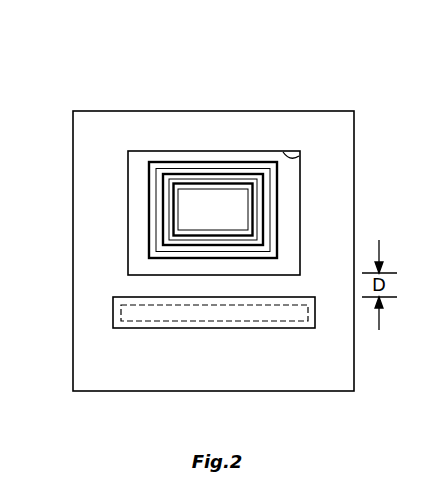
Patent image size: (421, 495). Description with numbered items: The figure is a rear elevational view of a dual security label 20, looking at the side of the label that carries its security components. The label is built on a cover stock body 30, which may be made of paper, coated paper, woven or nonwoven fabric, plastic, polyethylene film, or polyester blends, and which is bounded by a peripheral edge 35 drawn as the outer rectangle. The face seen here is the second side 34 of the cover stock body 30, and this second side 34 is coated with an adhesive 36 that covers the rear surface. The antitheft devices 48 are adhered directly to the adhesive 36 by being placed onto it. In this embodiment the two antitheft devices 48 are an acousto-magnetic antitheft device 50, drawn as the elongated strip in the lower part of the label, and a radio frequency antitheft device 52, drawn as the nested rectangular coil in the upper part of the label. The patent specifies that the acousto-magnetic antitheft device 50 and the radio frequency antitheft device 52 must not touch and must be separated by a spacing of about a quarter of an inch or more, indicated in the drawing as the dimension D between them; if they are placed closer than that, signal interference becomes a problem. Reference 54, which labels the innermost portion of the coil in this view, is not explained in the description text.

The dual security label 20 is at (213, 120).
The cover stock body 30 is at (355, 368).
The second side 34 is at (131, 120).
The peripheral edge 35 is at (355, 141).
The adhesive 36 is at (307, 120).
The antitheft devices 48 is at (133, 299).
The acousto-magnetic (AM) antitheft device 50 is at (153, 322).
The radio frequency (RF) antitheft device 52 is at (152, 193).
The coil gap 54 is at (152, 216).